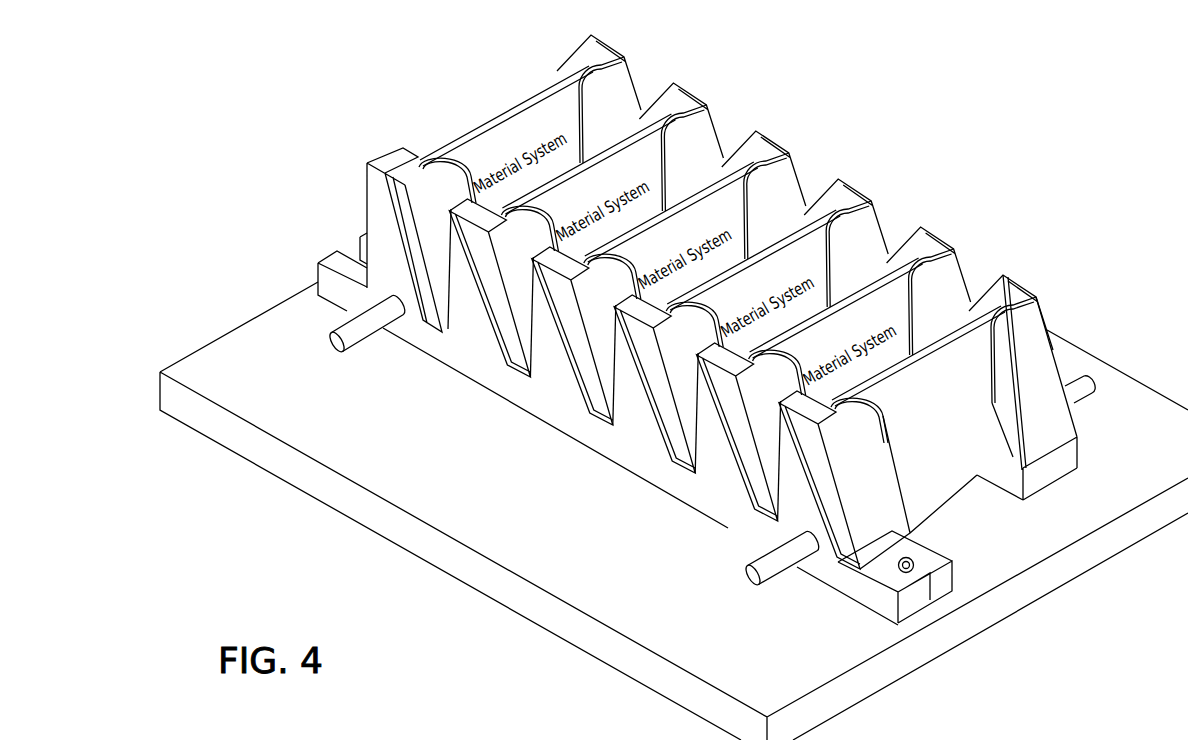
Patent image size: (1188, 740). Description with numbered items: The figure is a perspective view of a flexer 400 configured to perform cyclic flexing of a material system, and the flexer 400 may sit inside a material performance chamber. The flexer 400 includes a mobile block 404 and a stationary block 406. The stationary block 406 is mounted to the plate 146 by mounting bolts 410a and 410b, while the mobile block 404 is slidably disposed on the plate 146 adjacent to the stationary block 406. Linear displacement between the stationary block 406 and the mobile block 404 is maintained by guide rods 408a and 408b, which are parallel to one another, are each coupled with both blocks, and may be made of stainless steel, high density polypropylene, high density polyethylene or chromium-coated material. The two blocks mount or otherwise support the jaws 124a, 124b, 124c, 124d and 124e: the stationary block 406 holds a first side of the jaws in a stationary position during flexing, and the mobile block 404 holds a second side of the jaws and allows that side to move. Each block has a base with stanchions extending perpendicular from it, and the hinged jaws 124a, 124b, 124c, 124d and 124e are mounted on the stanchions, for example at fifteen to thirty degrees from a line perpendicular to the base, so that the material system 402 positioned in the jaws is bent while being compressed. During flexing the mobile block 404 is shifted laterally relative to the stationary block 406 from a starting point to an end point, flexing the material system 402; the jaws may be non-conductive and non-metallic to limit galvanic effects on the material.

The flexer 400 is at (872, 128).
The material system 402 is at (937, 422).
The mobile block 404 is at (587, 50).
The stationary block 406 is at (380, 208).
The guide rod 408a is at (335, 344).
The guide rod 408b is at (750, 577).
The mounting bolt 410a is at (357, 258).
The mounting bolt 410b is at (907, 565).
The jaw 124a is at (521, 193).
The jaw 124b is at (586, 230).
The jaw 124c is at (669, 278).
The jaw 124d is at (751, 326).
The jaw 124e is at (834, 374).
The plate 146 is at (768, 672).